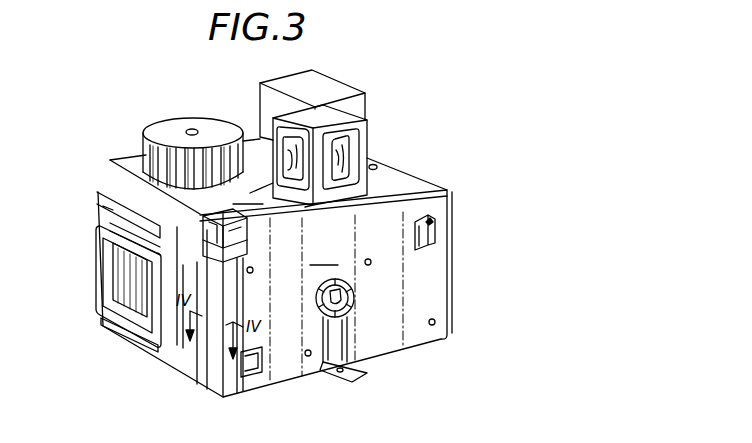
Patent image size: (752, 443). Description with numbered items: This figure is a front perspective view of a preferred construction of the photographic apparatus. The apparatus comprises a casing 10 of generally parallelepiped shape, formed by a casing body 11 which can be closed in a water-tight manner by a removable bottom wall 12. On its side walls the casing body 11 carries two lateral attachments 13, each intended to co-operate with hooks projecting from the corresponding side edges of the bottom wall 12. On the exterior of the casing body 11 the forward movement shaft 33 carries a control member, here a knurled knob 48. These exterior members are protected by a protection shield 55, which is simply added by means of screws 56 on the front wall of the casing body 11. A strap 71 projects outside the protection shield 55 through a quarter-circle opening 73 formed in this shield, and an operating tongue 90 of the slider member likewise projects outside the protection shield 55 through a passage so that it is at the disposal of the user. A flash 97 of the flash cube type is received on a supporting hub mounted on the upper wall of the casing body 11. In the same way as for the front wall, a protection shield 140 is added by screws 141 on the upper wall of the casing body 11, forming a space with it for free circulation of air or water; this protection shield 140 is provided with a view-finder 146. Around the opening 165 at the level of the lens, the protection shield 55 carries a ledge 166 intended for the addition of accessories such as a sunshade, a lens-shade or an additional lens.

The casing 10 is at (274, 281).
The casing body 11 is at (172, 352).
The removable bottom wall 12 is at (106, 326).
The attachments 13 is at (92, 268).
The forward movement shaft 33 is at (190, 128).
The knurled knob 48 is at (155, 123).
The protection shield 55 is at (323, 255).
The screws 56 is at (253, 268).
The strap 71 is at (428, 218).
The quarter-circle opening 73 is at (436, 232).
The operating tongue 90 is at (358, 375).
The flash 97 is at (365, 122).
The protection shield 140 is at (251, 195).
The screws 141 is at (203, 210).
The view-finder 146 is at (337, 90).
The opening 165 is at (352, 296).
The ledge 166 is at (354, 312).